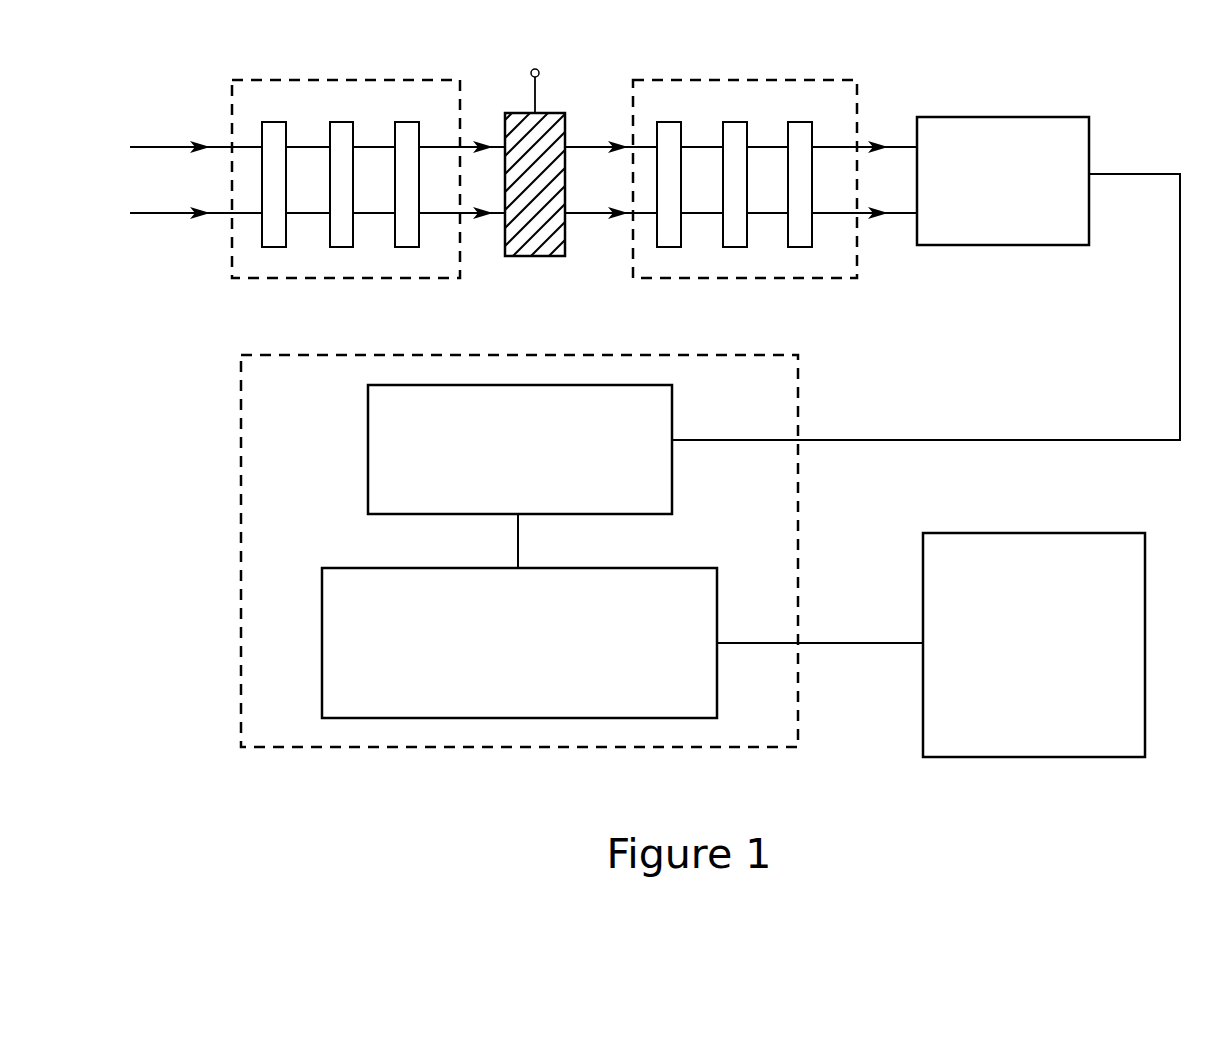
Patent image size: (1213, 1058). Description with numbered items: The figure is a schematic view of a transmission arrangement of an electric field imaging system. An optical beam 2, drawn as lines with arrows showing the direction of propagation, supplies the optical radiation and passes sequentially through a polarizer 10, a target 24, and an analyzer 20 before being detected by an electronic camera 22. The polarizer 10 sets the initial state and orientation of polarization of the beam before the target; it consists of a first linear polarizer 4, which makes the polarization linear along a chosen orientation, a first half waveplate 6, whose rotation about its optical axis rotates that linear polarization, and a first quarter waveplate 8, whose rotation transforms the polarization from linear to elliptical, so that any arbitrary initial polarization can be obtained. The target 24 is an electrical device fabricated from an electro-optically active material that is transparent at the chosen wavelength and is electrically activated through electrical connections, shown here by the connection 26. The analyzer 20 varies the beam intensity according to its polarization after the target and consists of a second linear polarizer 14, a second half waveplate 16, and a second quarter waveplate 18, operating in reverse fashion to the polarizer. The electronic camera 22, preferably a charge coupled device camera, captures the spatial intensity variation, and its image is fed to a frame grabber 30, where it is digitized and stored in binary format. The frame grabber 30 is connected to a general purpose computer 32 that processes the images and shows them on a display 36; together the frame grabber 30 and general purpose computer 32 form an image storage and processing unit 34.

The optical beam 2 is at (182, 150).
The first linear polarizer 4 is at (276, 120).
The first half waveplate 6 is at (343, 120).
The first quarter waveplate 8 is at (410, 120).
The polarizer 10 is at (287, 280).
The second linear polarizer 14 is at (800, 120).
The second half waveplate 16 is at (735, 120).
The second quarter waveplate 18 is at (670, 120).
The analyzer 20 is at (688, 280).
The electronic camera 22 is at (990, 246).
The target 24 is at (530, 257).
The sample rotation axis 26 is at (535, 66).
The frame grabber 30 is at (367, 448).
The general purpose computer 32 is at (352, 568).
The image storage and processing unit 34 is at (240, 488).
The display 36 is at (1146, 682).